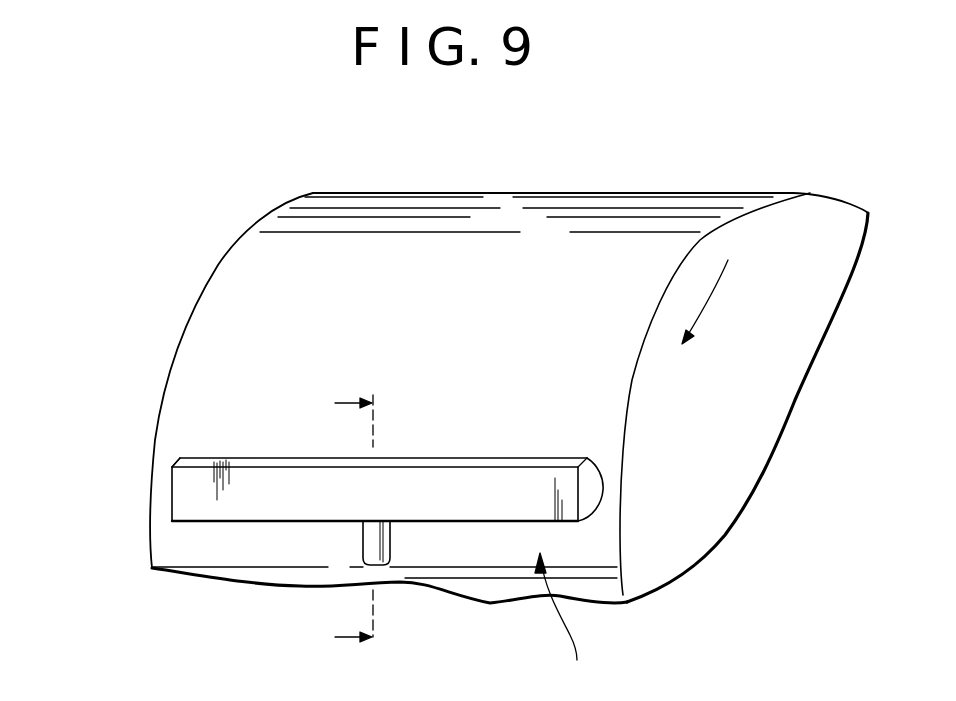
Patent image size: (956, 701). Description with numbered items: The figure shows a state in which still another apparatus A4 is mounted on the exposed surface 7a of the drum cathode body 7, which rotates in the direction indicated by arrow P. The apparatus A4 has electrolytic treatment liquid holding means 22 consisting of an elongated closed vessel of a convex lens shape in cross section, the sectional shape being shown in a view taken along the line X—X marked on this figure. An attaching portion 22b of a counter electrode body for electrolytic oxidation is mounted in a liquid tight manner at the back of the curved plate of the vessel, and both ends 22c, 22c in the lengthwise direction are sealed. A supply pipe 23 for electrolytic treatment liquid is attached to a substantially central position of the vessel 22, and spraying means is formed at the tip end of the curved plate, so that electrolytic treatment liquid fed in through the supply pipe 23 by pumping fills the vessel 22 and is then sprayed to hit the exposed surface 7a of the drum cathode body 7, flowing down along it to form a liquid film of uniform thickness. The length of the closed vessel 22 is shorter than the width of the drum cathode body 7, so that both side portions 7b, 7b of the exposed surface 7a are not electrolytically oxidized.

The drum cathode body 7 is at (180, 330).
The exposed surface 7a is at (370, 270).
The side portions 7b is at (162, 498).
The electrolytic treatment liquid holding means 22 is at (449, 565).
The attaching portion 22b is at (265, 500).
The ends 22c is at (172, 486).
The supply pipe 23 is at (375, 538).
The apparatus A4 is at (568, 623).
The arrow P is at (705, 302).
The line X— X is at (340, 522).